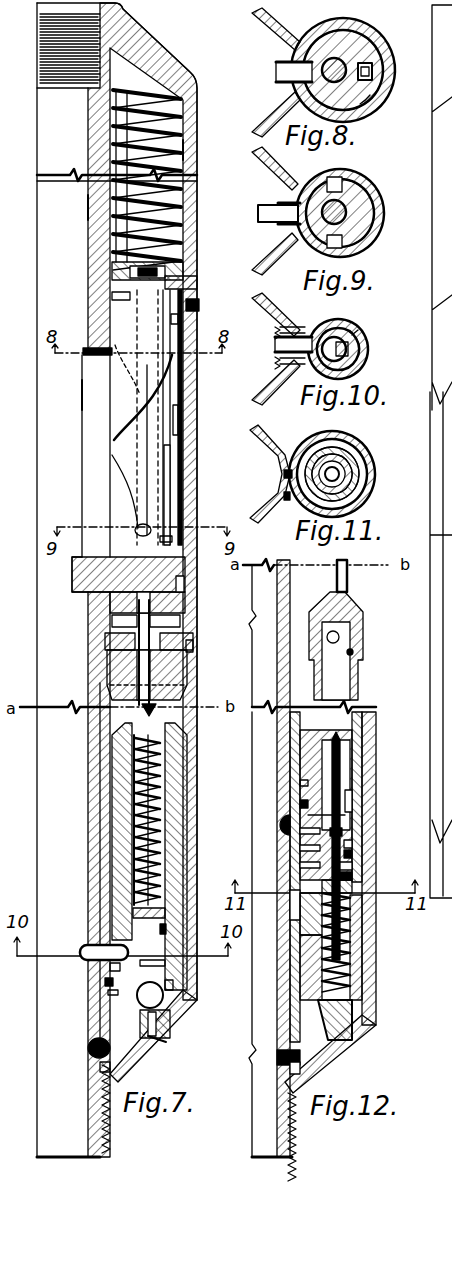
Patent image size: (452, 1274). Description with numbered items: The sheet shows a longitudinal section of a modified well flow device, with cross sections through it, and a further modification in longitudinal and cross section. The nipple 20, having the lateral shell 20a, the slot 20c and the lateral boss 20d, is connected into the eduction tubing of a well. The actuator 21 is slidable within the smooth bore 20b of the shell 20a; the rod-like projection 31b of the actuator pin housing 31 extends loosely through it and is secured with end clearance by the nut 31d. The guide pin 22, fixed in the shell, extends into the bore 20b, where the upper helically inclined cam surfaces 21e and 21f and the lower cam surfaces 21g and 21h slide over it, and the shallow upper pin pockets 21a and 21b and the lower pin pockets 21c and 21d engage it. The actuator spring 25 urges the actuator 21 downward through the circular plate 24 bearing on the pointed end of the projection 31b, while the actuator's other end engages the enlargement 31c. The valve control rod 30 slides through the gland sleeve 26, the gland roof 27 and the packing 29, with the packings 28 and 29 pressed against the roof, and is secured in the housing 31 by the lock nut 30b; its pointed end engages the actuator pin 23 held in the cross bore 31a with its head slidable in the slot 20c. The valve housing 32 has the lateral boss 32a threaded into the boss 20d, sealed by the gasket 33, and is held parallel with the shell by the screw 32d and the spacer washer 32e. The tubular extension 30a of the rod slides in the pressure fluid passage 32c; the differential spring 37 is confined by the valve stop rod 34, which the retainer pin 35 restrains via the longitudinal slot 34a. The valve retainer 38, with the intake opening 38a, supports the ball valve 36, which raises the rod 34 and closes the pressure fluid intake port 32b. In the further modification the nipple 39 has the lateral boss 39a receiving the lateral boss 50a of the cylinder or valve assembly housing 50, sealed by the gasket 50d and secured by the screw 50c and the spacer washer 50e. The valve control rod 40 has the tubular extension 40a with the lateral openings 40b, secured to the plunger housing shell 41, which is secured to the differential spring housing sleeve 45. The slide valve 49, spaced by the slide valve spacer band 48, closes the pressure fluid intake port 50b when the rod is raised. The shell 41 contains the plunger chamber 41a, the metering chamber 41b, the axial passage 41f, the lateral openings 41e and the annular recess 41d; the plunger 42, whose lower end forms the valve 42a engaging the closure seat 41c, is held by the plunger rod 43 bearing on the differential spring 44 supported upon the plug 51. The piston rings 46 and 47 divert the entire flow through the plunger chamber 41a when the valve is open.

In FIG. 7, the nipple 20 is at (120, 28).
In FIG. 8, the nipple 20 is at (262, 29).
In FIG. 9, the nipple 20 is at (264, 166).
In FIG. 10, the nipple 20 is at (268, 308).
In FIG. 7, the lateral shell 20a is at (197, 149).
In FIG. 8, the lateral shell 20a is at (380, 52).
In FIG. 9, the lateral shell 20a is at (362, 180).
In FIG. 7, the smooth bore 20b is at (100, 207).
In FIG. 7, the slot 20c is at (90, 391).
In FIG. 8, the slot 20c is at (278, 72).
In FIG. 9, the slot 20c is at (270, 230).
In FIG. 7, the lateral boss 20d is at (108, 983).
In FIG. 10, the lateral boss 20d is at (275, 328).
In FIG. 7, the actuator 21 is at (165, 368).
In FIG. 8, the actuator 21 is at (330, 42).
In FIG. 9, the actuator 21 is at (360, 212).
In FIG. 7, the shallow upper pin pocket 21a is at (120, 346).
In FIG. 8, the shallow upper pin pocket 21a is at (272, 102).
In FIG. 7, the deep upper pin pocket 21b is at (178, 320).
In FIG. 8, the deep upper pin pocket 21b is at (378, 108).
In FIG. 9, the lower pin pocket 21c is at (345, 183).
In FIG. 7, the lower pin pocket 21d is at (140, 527).
In FIG. 9, the lower pin pocket 21d is at (345, 243).
In FIG. 7, the upper helically inclined cam surface 21e is at (172, 420).
In FIG. 7, the upper helically inclined cam surface 21f is at (125, 420).
In FIG. 7, the lower helically inclined cam surface 21g is at (118, 490).
In FIG. 7, the lower helically inclined cam surface 21h is at (166, 458).
In FIG. 7, the guide pin 22 is at (199, 303).
In FIG. 8, the guide pin 22 is at (373, 71).
In FIG. 7, the actuator pin 23 is at (72, 585).
In FIG. 9, the actuator pin 23 is at (262, 206).
In FIG. 7, the circular plate 24 is at (112, 270).
In FIG. 7, the actuator spring 25 is at (178, 207).
In FIG. 7, the gland sleeve 26 is at (112, 668).
In FIG. 7, the gland roof 27 is at (105, 640).
In FIG. 7, the packing 28 is at (188, 648).
In FIG. 7, the packing 29 is at (193, 640).
In FIG. 7, the valve control rod 30 is at (160, 710).
In FIG. 7, the tubular extension 30a is at (160, 795).
In FIG. 10, the tubular extension 30a is at (348, 357).
In FIG. 7, the lock nut 30b is at (112, 621).
In FIG. 7, the actuator pin housing 31 is at (185, 603).
In FIG. 7, the cross bore 31a is at (180, 580).
In FIG. 7, the rod-like projection 31b is at (118, 298).
In FIG. 8, the rod-like projection 31b is at (360, 46).
In FIG. 9, the rod-like projection 31b is at (350, 228).
In FIG. 7, the enlargement 31c is at (165, 540).
In FIG. 7, the nut 31d is at (185, 282).
In FIG. 7, the valve housing 32 is at (120, 808).
In FIG. 10, the valve housing 32 is at (350, 318).
In FIG. 7, the lateral boss 32a is at (82, 952).
In FIG. 10, the lateral boss 32a is at (276, 361).
In FIG. 7, the pressure fluid intake port 32b is at (110, 968).
In FIG. 10, the pressure fluid intake port 32b is at (276, 348).
In FIG. 7, the pressure fluid passage 32c is at (167, 985).
In FIG. 7, the screw 32d is at (88, 1048).
In FIG. 7, the spacer washer 32e is at (100, 1066).
In FIG. 7, the gasket 33 is at (110, 993).
In FIG. 10, the gasket 33 is at (302, 372).
In FIG. 7, the valve stop rod 34 is at (160, 912).
In FIG. 10, the valve stop rod 34 is at (352, 372).
In FIG. 7, the longitudinal slot 34a is at (150, 962).
In FIG. 10, the longitudinal slot 34a is at (354, 334).
In FIG. 7, the retainer pin 35 is at (166, 928).
In FIG. 10, the retainer pin 35 is at (350, 347).
In FIG. 7, the ball valve 36 is at (163, 996).
In FIG. 7, the differential spring 37 is at (135, 880).
In FIG. 7, the valve retainer 38 is at (175, 1027).
In FIG. 7, the intake opening 38a is at (160, 1040).
In FIG. 11, the nipple 39 is at (265, 440).
In FIG. 12, the nipple 39 is at (286, 583).
In FIG. 12, the lateral boss 39a is at (283, 824).
In FIG. 12, the valve control rod 40 is at (350, 583).
In FIG. 12, the tubular extension 40a is at (360, 637).
In FIG. 12, the lateral openings 40b is at (355, 655).
In FIG. 12, the plunger housing shell 41 is at (352, 775).
In FIG. 12, the plunger chamber 41a is at (352, 796).
In FIG. 12, the metering chamber 41b is at (352, 815).
In FIG. 12, the closure seat 41c is at (352, 844).
In FIG. 12, the annular recess 41d is at (352, 854).
In FIG. 12, the lateral openings 41e is at (352, 866).
In FIG. 12, the axial passage 41f is at (352, 878).
In FIG. 12, the plunger 42 is at (345, 758).
In FIG. 12, the valve 42a is at (302, 782).
In FIG. 12, the plunger rod 43 is at (342, 832).
In FIG. 11, the differential spring 44 is at (290, 478).
In FIG. 12, the differential spring 44 is at (352, 968).
In FIG. 11, the differential spring housing sleeve 45 is at (354, 486).
In FIG. 12, the differential spring housing sleeve 45 is at (355, 990).
In FIG. 12, the piston ring 46 is at (352, 890).
In FIG. 12, the piston ring 47 is at (302, 803).
In FIG. 11, the slide valve spacer band 48 is at (357, 470).
In FIG. 12, the slide valve spacer band 48 is at (352, 928).
In FIG. 11, the slide valve 49 is at (350, 444).
In FIG. 12, the slide valve 49 is at (300, 903).
In FIG. 11, the cylinder or valve assembly housing 50 is at (366, 456).
In FIG. 12, the cylinder or valve assembly housing 50 is at (362, 735).
In FIG. 12, the lateral boss 50a is at (302, 848).
In FIG. 12, the pressure fluid intake port 50b is at (302, 831).
In FIG. 12, the screw 50c is at (300, 1058).
In FIG. 12, the gasket 50d is at (302, 865).
In FIG. 11, the spacer washer 50e is at (283, 498).
In FIG. 12, the spacer washer 50e is at (290, 1066).
In FIG. 12, the plug 51 is at (352, 1040).